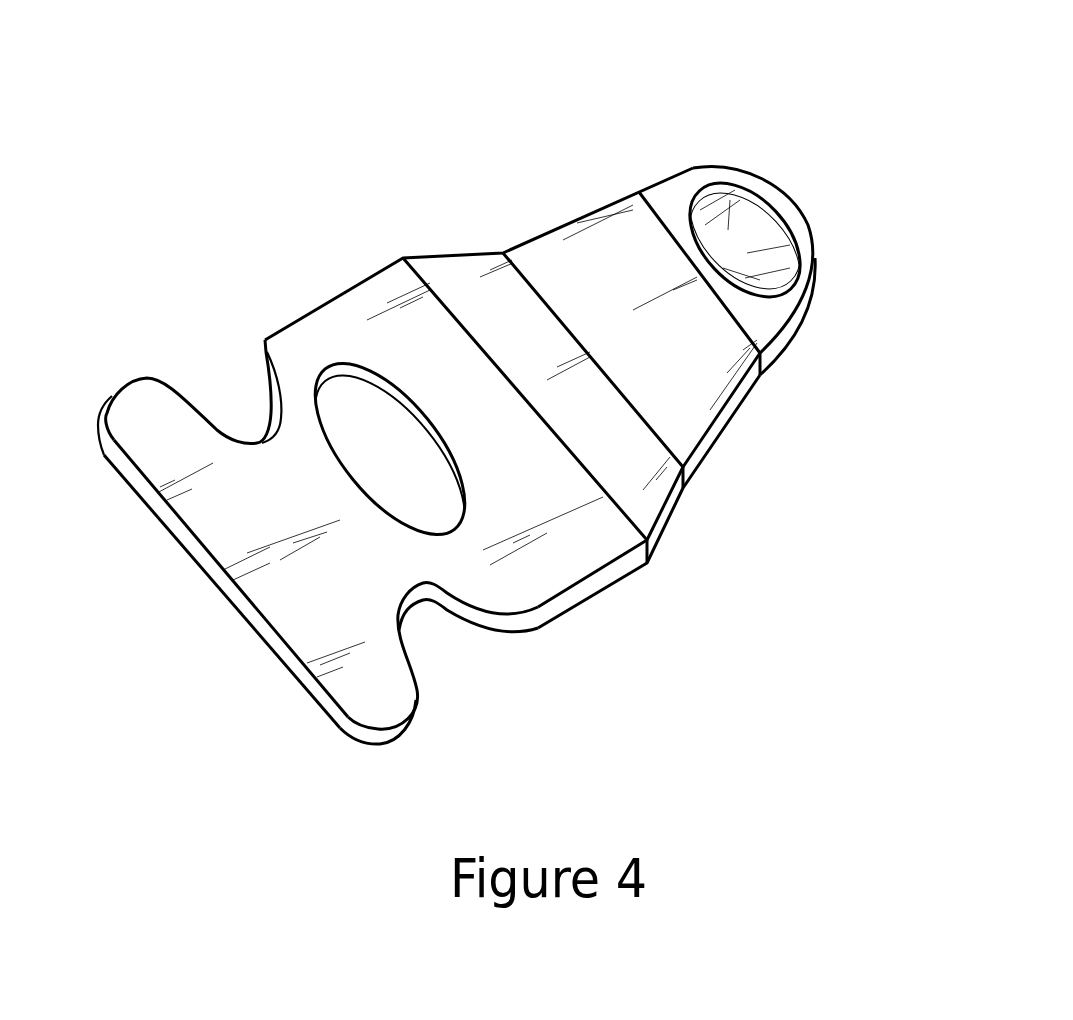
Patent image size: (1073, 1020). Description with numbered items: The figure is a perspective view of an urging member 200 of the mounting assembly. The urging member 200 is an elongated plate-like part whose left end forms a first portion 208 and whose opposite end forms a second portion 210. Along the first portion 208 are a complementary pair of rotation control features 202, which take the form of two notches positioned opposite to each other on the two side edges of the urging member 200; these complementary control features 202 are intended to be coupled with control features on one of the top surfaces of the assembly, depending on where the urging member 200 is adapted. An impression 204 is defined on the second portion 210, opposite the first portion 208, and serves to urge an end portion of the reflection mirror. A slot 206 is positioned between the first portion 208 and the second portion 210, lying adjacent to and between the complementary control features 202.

The urging member 200 is at (882, 118).
The complementary pair of rotation control features 202 is at (231, 383).
The impression 204 is at (730, 183).
The slot 206 is at (366, 417).
The first portion 208 is at (242, 530).
The second portion 210 is at (807, 260).